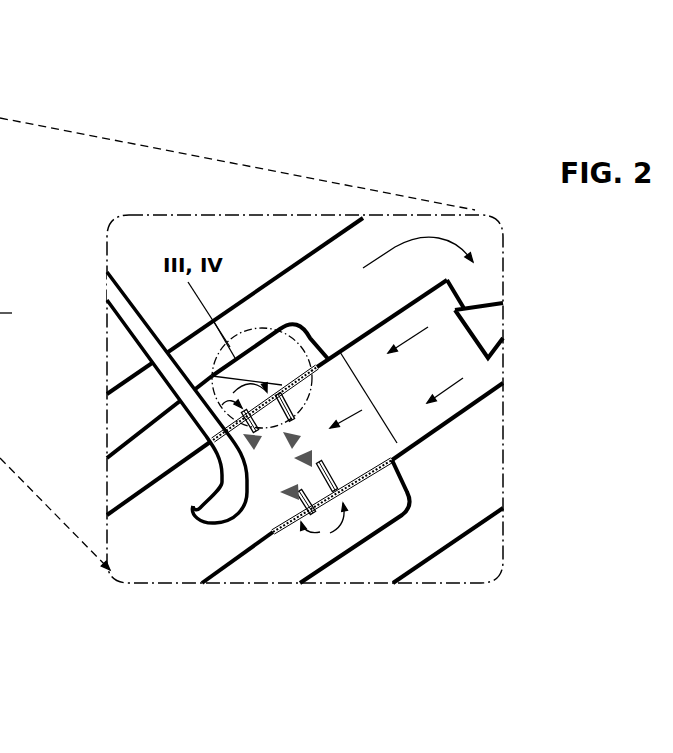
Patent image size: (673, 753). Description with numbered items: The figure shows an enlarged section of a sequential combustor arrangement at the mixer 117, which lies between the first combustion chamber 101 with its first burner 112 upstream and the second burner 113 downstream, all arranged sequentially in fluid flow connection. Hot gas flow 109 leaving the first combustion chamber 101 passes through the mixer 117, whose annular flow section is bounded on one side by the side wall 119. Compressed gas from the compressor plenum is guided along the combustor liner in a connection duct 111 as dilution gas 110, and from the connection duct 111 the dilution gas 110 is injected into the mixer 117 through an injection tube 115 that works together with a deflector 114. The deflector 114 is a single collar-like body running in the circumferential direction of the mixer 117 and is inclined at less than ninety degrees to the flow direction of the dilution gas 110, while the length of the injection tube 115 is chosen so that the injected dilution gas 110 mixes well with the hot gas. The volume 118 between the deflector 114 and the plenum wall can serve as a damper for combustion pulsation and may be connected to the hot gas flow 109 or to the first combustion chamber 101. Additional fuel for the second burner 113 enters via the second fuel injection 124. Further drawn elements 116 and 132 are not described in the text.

The first combustion chamber 101 is at (403, 382).
The hot gas flow 109 is at (412, 342).
The dilution gas 110 is at (295, 557).
The connection duct 111 is at (145, 458).
The first burner 112 is at (495, 320).
The second burner 113 is at (148, 553).
The deflector 114 is at (211, 375).
The injection tube 115 is at (270, 388).
The second valve flap 116 is at (308, 365).
The mixer 117 is at (340, 463).
The volume 118 is at (248, 362).
The side wall 119 is at (300, 527).
The second fuel injection 124 is at (137, 327).
The bottom panel 132 is at (380, 506).